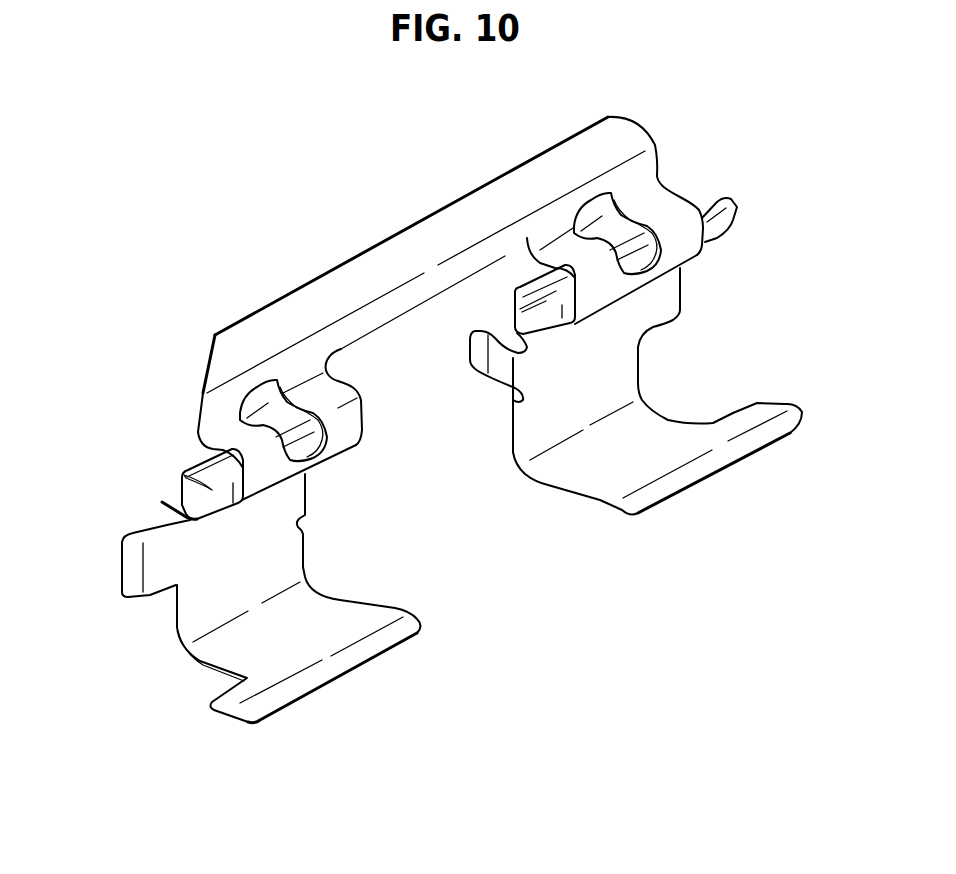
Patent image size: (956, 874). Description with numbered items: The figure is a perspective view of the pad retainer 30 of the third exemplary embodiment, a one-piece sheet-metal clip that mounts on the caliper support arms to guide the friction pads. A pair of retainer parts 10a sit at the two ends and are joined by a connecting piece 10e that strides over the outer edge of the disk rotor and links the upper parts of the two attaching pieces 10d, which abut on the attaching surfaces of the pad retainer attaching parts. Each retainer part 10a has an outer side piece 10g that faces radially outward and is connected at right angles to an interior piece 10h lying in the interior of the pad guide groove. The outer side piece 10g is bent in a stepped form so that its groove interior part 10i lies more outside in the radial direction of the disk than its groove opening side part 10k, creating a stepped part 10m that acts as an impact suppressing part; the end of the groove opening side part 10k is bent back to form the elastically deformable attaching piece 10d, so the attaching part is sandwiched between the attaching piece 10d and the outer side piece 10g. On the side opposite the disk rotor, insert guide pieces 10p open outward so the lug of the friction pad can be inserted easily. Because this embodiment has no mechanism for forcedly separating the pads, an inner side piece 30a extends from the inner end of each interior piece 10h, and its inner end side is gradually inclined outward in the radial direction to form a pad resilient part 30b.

The pad retainer 30 is at (416, 136).
The retainer part 10a is at (697, 279).
The attaching piece 10d is at (675, 207).
The connecting piece 10e is at (413, 245).
The outer side piece 10g is at (592, 322).
The interior piece 10h is at (530, 425).
The groove interior part 10i is at (522, 270).
The groove opening side part 10k is at (560, 303).
The stepped part 10m is at (517, 312).
The insert guide piece 10p is at (728, 208).
The inner side piece 30a is at (575, 481).
The pad resilient part 30b is at (737, 440).